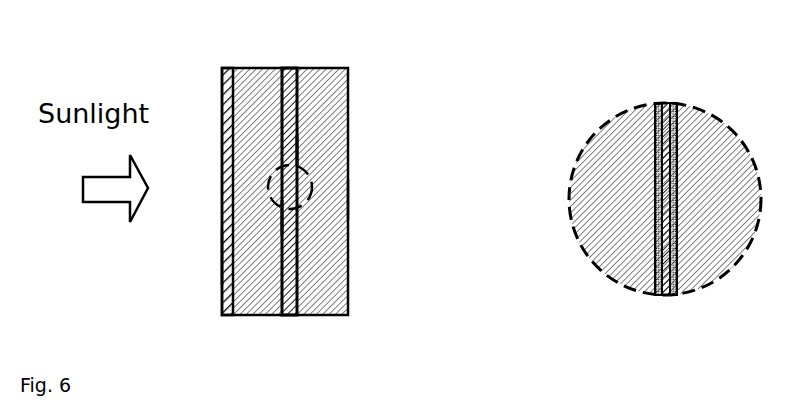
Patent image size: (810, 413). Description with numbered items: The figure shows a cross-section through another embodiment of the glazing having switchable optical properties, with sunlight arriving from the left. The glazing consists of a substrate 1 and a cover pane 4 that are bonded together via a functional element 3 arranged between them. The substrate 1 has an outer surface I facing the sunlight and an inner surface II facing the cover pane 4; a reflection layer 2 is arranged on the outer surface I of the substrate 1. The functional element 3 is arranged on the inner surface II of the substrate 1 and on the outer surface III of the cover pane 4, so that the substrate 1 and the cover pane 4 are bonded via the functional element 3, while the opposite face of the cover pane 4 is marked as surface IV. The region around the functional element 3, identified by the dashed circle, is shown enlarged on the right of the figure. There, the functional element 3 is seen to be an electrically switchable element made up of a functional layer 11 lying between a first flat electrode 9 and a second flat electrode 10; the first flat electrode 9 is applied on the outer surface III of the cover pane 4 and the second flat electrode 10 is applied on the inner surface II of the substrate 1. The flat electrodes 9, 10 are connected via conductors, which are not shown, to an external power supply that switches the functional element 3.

The substrate 1 is at (256, 283).
The reflection layer 2 is at (227, 68).
The functional element 3 is at (291, 68).
The cover pane 4 is at (321, 280).
The first flat electrode 9 is at (677, 104).
The second flat electrode 10 is at (656, 104).
The functional layer 11 is at (665, 103).
The outer surface of the substrate I is at (222, 257).
The inner surface of the substrate II is at (280, 217).
The outer surface of the cover pane III is at (302, 148).
The rear surface IV is at (350, 201).